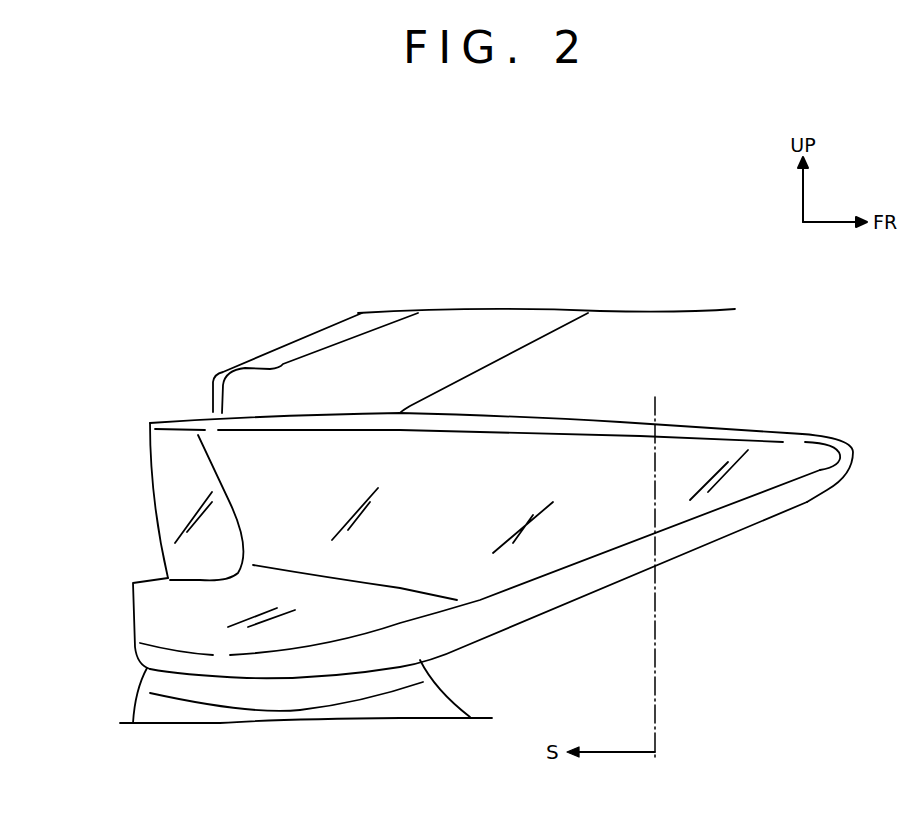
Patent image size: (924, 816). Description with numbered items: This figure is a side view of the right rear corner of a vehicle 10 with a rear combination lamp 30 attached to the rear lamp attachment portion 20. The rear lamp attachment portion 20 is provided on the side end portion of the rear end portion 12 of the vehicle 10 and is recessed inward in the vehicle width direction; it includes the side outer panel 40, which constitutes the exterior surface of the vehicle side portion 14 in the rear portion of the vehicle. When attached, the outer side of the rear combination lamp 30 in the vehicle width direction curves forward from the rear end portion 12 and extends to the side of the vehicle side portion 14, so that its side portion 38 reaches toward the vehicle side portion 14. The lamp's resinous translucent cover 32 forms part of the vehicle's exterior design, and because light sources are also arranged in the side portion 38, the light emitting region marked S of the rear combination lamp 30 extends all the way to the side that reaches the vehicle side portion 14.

The vehicle 10 is at (573, 243).
The rear end portion 12 is at (308, 363).
The vehicle side portion 14 is at (803, 583).
The rear lamp attachment portion 20 is at (603, 422).
The rear combination lamp 30 is at (552, 585).
The cover 32 is at (482, 555).
The side portion 38 is at (605, 530).
The side outer panel 40 is at (802, 370).